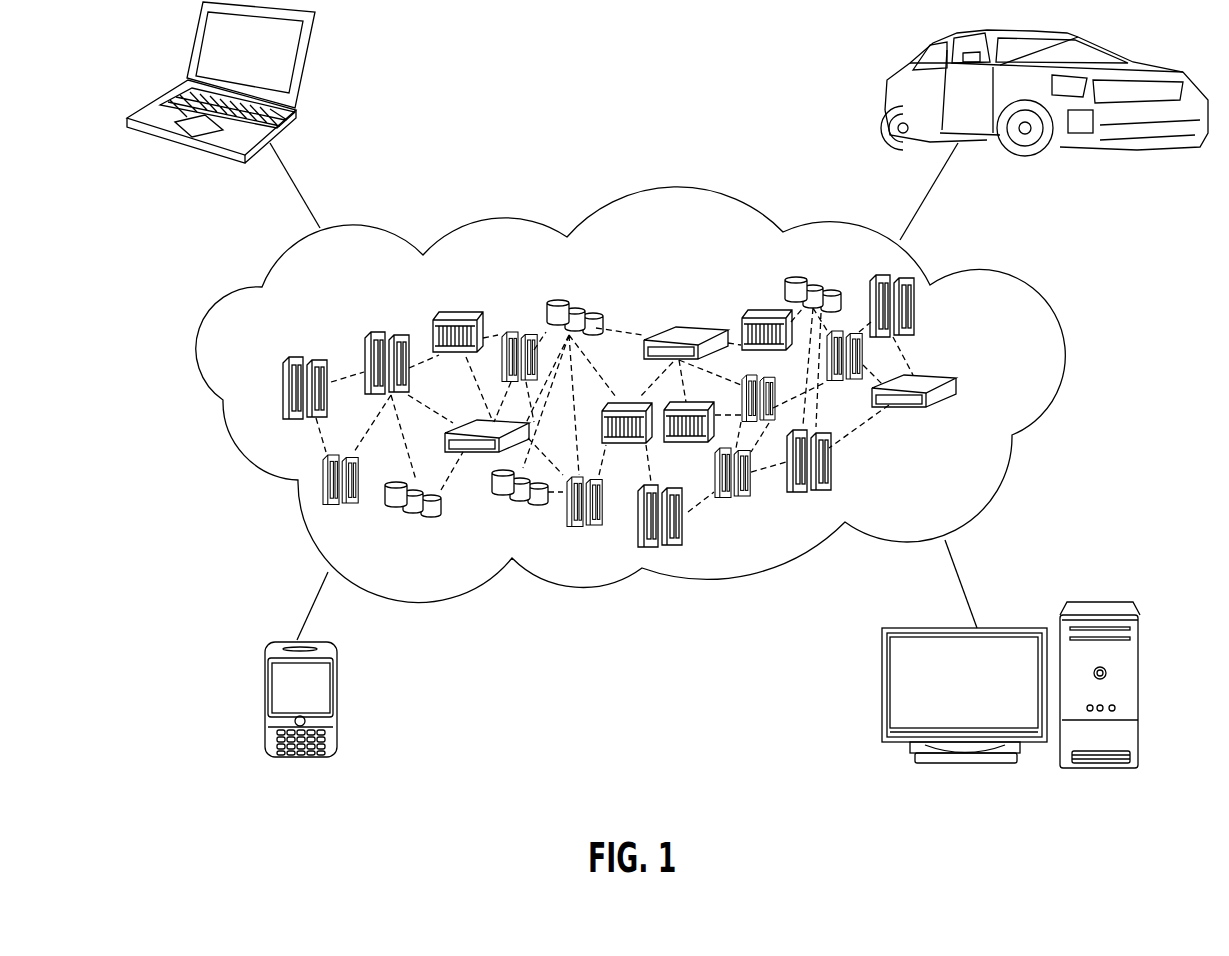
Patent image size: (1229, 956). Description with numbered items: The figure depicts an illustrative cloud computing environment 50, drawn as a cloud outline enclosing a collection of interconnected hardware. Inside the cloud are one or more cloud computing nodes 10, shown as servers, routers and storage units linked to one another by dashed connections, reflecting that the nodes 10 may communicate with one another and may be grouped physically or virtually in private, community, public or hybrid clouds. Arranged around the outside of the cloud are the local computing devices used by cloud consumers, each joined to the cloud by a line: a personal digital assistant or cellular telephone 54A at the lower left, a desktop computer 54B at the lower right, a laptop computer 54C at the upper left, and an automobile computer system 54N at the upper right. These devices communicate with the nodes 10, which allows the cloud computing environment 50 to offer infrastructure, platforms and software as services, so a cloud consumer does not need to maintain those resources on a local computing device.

The cloud computing environment 50 is at (1023, 300).
The cloud computing nodes 10 is at (994, 387).
The personal digital assistant or cellular telephone 54A is at (267, 703).
The desktop computer 54B is at (1103, 602).
The laptop computer 54C is at (308, 68).
The automobile computer system 54N is at (890, 77).